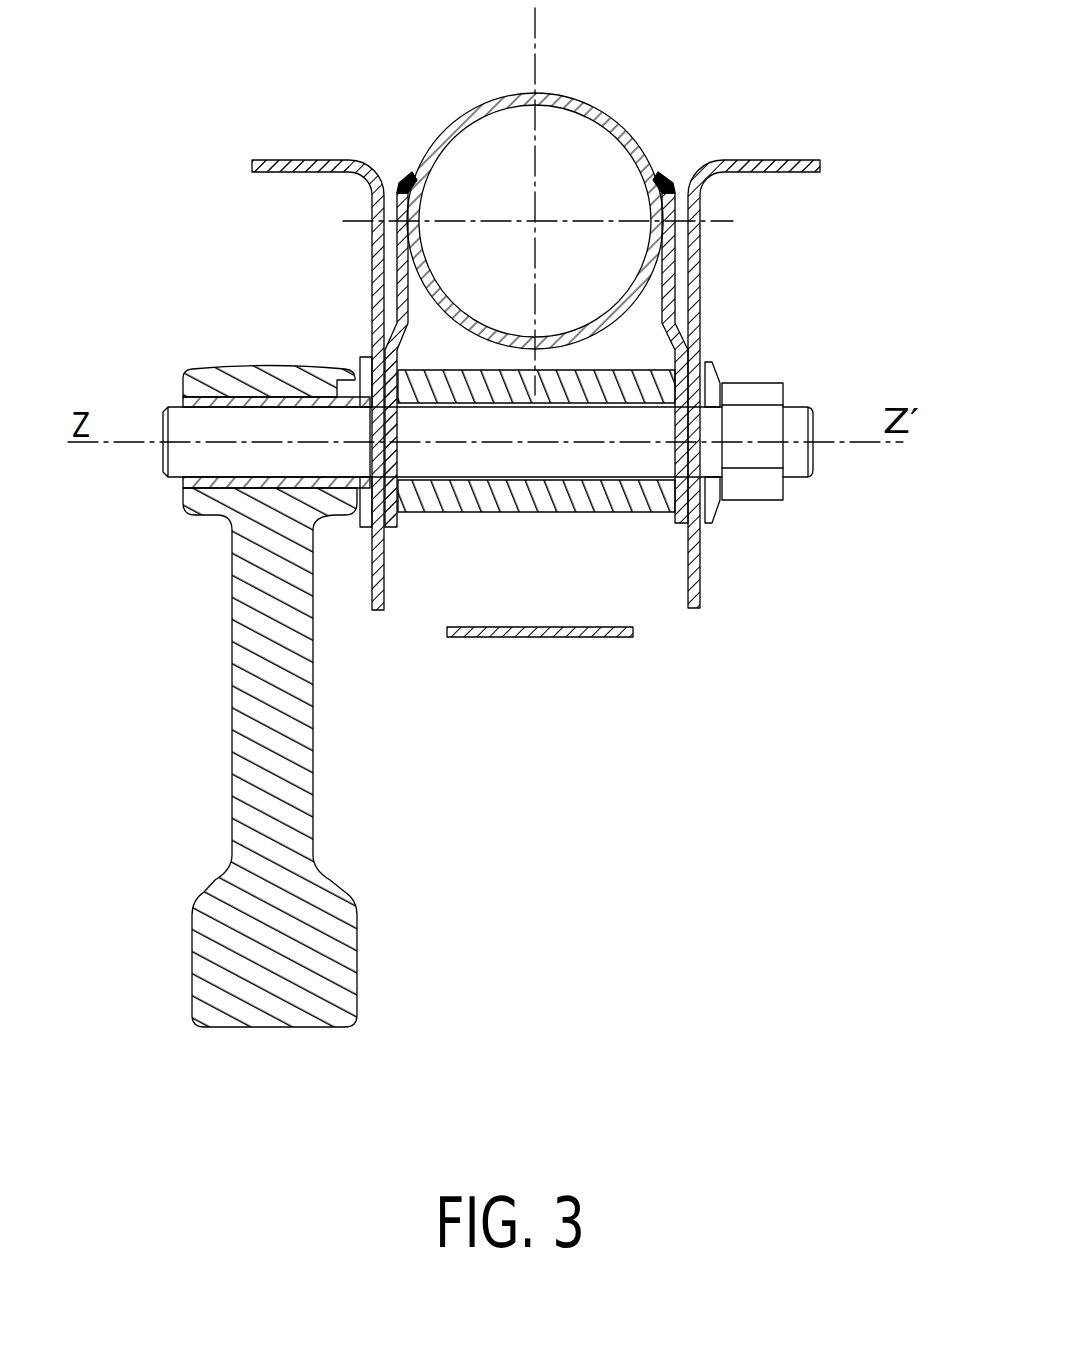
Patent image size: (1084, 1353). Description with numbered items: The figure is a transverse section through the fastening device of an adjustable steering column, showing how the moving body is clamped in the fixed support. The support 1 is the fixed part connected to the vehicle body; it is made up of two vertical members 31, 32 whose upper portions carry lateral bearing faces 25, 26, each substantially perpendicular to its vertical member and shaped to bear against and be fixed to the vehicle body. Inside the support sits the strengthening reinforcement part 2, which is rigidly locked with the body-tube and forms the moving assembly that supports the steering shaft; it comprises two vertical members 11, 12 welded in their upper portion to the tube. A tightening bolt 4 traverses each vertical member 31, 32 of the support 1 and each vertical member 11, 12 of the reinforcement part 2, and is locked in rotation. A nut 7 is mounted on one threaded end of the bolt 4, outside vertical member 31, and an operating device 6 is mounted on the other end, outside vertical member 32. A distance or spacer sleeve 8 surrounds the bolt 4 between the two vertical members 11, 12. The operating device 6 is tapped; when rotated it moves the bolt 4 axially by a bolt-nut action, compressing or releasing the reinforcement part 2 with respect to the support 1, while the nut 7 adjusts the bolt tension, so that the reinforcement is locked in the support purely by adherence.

The support 1 is at (298, 319).
The strengthening reinforcement part 2 is at (466, 98).
The tightening bolt 4 is at (434, 460).
The operating device 6 is at (215, 355).
The nut 7 is at (738, 510).
The distance or spacer sleeve 8 is at (527, 509).
The vertical member 11 is at (777, 347).
The vertical member 12 is at (388, 334).
The lateral bearing face 25 is at (795, 158).
The lateral bearing face 26 is at (279, 158).
The vertical member 31 is at (697, 270).
The vertical member 32 is at (343, 349).